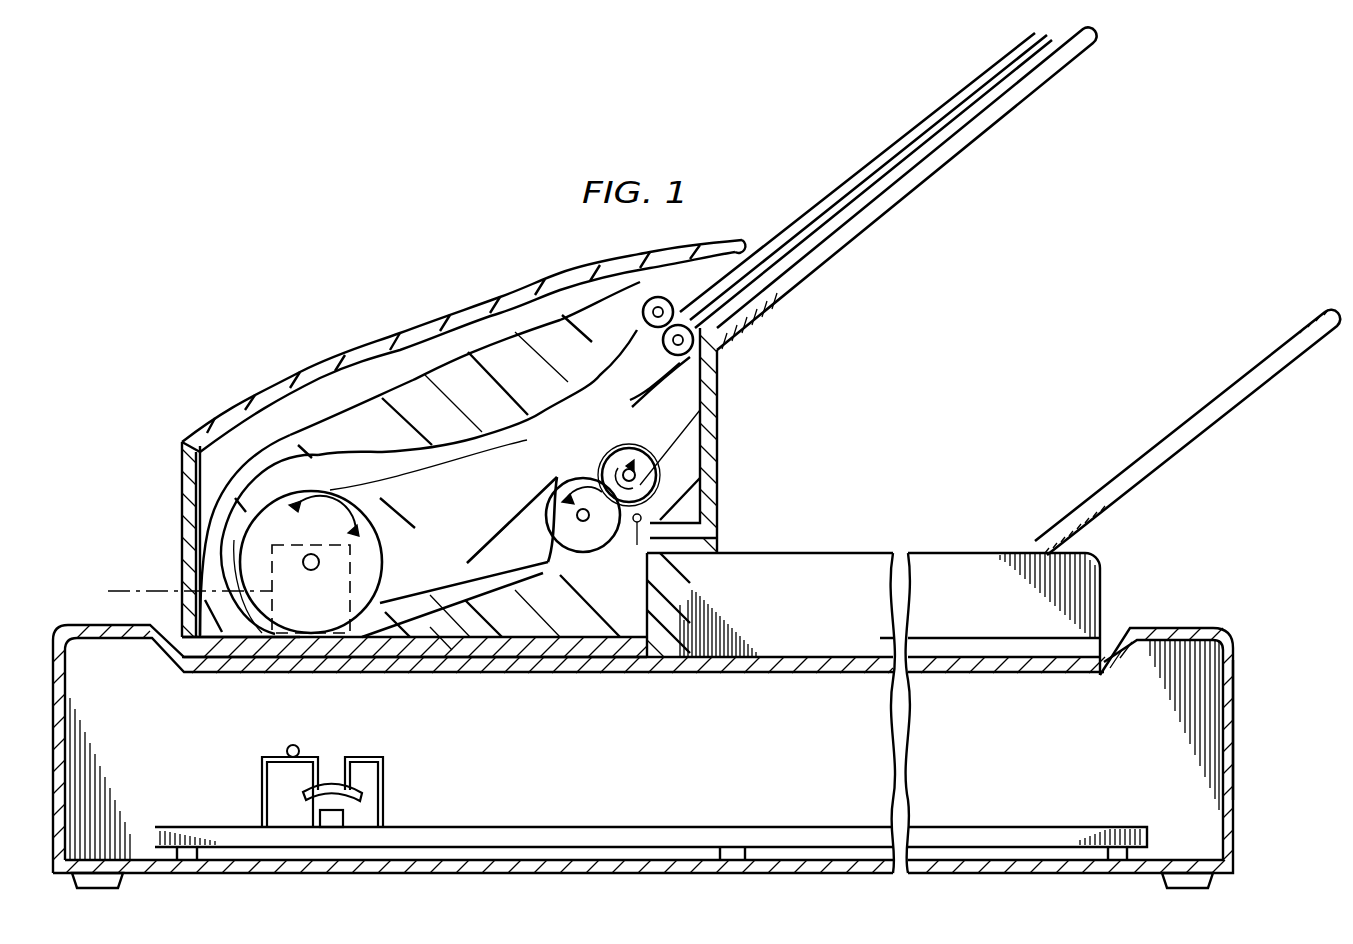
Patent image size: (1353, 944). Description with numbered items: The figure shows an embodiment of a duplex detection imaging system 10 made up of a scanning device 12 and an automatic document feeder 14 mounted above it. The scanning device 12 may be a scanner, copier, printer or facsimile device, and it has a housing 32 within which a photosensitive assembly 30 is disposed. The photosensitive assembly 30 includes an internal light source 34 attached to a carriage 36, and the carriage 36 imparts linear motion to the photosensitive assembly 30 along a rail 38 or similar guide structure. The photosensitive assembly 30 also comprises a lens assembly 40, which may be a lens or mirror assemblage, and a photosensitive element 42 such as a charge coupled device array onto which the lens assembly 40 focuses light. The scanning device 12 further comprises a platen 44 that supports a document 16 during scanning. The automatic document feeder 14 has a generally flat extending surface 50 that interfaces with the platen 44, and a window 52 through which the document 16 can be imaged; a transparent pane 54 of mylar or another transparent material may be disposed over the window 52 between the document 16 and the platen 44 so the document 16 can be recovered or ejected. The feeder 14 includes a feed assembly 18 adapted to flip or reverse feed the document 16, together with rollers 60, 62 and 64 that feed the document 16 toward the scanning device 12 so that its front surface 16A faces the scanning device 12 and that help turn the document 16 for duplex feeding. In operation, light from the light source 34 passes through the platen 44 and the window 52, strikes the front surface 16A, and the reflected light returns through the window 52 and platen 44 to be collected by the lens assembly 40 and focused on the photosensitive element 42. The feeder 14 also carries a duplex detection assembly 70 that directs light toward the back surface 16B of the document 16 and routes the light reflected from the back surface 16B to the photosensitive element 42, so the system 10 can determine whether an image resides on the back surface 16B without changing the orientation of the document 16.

The duplex detection imaging system 10 is at (398, 228).
The scanning device 12 is at (1264, 724).
The automatic document feeder 14 is at (750, 405).
The document 16 is at (876, 150).
The front surface 16A is at (452, 650).
The back surface 16B is at (468, 563).
The feed assembly 18 is at (684, 436).
The photosensitive assembly 30 is at (332, 773).
The housing 32 is at (1237, 776).
The light source 34 is at (286, 750).
The carriage 36 is at (258, 794).
The rail 38 is at (672, 830).
The lens assembly 40 is at (328, 778).
The photosensitive element 42 is at (345, 820).
The platen 44 is at (1010, 660).
The extending surface 50 is at (800, 657).
The window 52 is at (303, 658).
The transparent pane 54 is at (350, 612).
The roller 60 is at (297, 490).
The roller 62 is at (558, 480).
The roller 64 is at (633, 447).
The duplex detection assembly 70 is at (283, 545).